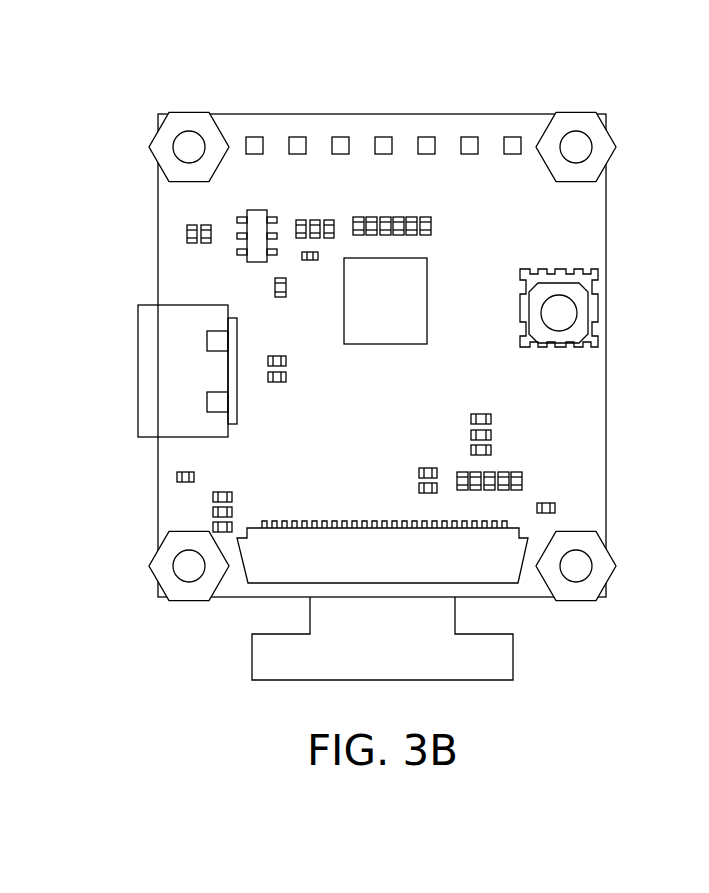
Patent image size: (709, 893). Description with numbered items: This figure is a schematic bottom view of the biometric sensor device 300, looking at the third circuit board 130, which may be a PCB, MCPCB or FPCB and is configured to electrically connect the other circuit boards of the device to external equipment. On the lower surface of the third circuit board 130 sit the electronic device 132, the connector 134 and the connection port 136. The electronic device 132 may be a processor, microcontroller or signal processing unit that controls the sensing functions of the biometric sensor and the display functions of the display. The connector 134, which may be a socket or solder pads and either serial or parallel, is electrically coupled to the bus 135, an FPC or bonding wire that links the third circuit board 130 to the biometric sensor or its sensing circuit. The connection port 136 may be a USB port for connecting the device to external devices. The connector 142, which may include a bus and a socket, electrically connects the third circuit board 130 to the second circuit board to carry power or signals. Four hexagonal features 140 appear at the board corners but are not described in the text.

The biometric sensor device 300 is at (613, 75).
The third circuit board 130 is at (597, 384).
The electronic device 132 is at (399, 306).
The connector 134 is at (260, 573).
The bus 135 is at (503, 657).
The connection port 136 is at (148, 370).
The hexagonal standoff 140 is at (162, 124).
The connector 142 is at (512, 137).